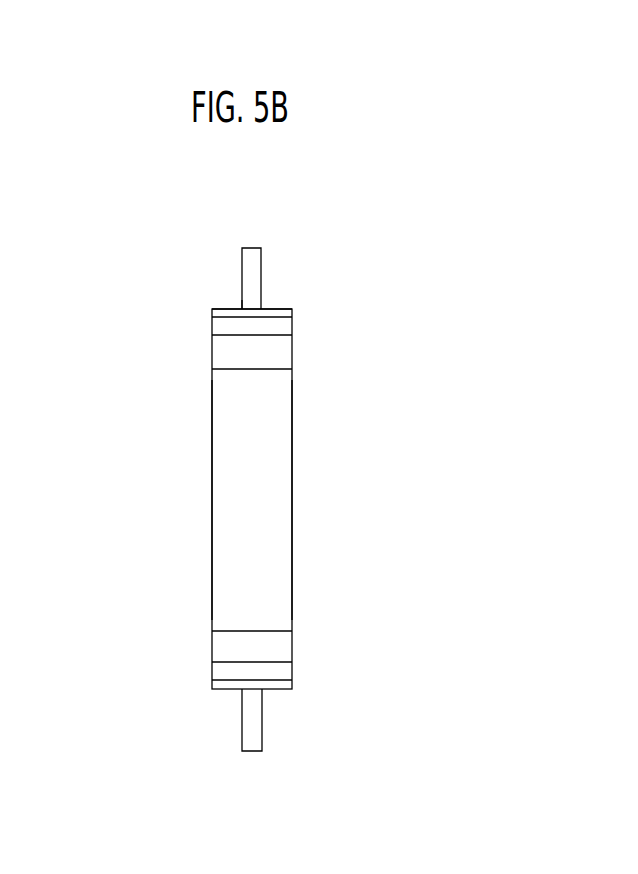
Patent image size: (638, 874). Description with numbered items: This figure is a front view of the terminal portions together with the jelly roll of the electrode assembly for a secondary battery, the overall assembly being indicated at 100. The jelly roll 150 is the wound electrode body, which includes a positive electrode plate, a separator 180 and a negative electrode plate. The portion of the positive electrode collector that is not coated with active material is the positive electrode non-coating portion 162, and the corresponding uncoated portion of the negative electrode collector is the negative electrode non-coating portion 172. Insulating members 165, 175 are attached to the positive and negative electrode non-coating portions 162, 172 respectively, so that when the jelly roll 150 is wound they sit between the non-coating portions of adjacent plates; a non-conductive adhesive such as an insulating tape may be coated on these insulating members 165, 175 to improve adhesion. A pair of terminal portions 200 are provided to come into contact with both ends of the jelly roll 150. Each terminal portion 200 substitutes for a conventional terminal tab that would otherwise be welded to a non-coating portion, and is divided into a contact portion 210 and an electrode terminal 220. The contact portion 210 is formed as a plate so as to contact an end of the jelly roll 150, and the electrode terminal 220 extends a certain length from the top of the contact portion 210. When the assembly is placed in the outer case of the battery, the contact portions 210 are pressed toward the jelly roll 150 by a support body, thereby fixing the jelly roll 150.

The rechargeable battery 100 is at (320, 500).
The jelly roll 150 is at (208, 454).
The positive electrode non-coating portion 162 is at (218, 333).
The insulating member 165 is at (218, 361).
The negative electrode non-coating portion 172 is at (218, 672).
The insulating member 175 is at (218, 642).
The separator 180 is at (217, 525).
The terminal portion 200 is at (286, 305).
The contact portion 210 is at (232, 306).
The electrode terminal 220 is at (251, 256).